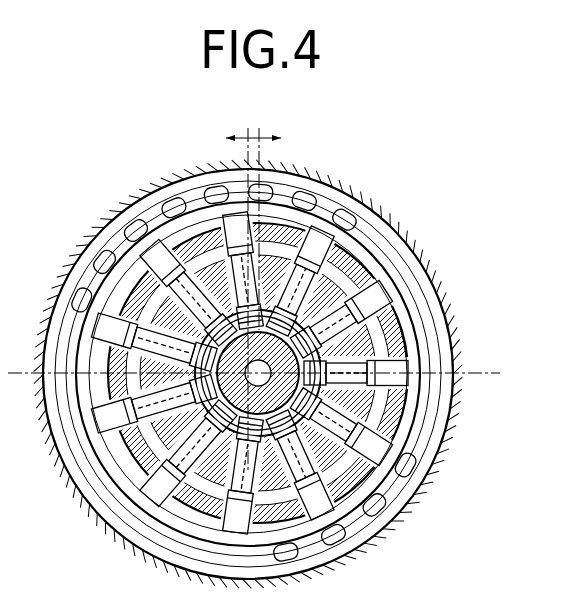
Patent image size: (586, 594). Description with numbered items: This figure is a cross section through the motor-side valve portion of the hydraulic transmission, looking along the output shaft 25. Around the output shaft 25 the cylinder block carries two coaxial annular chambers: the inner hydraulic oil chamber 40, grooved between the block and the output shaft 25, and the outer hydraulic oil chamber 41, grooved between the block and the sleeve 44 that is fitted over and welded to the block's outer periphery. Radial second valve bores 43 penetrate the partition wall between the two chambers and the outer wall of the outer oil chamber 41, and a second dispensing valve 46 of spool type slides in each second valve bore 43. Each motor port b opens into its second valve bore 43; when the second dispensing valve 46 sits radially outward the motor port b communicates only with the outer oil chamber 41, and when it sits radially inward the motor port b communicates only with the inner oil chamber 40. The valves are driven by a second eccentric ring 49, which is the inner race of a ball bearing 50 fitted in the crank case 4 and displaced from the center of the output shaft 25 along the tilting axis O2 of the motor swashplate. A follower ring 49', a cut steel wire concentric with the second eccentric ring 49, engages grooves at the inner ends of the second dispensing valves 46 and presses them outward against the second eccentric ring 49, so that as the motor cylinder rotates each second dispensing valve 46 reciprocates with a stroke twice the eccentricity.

The crank case 4 is at (425, 268).
The output shaft 25 is at (120, 308).
The inner hydraulic oil chamber 40 is at (130, 460).
The outer hydraulic oil chamber 41 is at (182, 506).
The second valve bore 43 is at (353, 313).
The sleeve 44 is at (377, 203).
The second dispensing valve 46 is at (160, 266).
The second eccentric ring 49 is at (248, 350).
The follower ring 49' is at (214, 232).
The ball bearing 50 is at (306, 197).
The motor port b is at (308, 460).
The tilting axis of the motor swashplate O2 is at (483, 373).